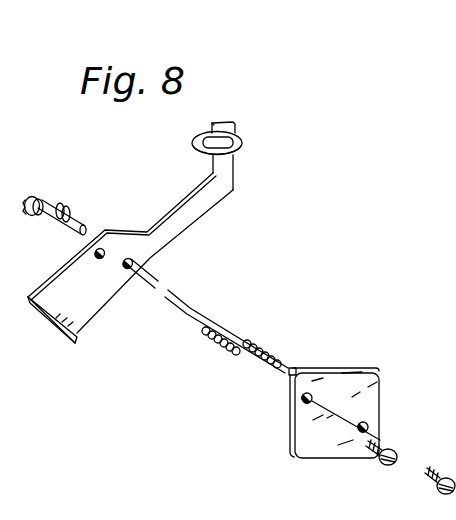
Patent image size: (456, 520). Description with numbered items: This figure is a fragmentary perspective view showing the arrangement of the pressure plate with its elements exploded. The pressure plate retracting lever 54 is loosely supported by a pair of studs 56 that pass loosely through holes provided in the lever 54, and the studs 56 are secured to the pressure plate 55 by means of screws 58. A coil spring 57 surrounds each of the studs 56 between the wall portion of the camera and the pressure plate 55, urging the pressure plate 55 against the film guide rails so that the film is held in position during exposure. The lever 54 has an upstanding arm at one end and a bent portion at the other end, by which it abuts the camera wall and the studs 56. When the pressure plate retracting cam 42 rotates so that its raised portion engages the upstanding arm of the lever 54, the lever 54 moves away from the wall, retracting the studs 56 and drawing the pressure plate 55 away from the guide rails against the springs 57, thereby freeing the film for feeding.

The pressure plate retracting cam 42 is at (242, 150).
The pressure plate retracting lever 54 is at (203, 210).
The pressure plate 55 is at (328, 382).
The studs 56 is at (48, 203).
The coil spring 57 is at (262, 345).
The screws 58 is at (445, 470).